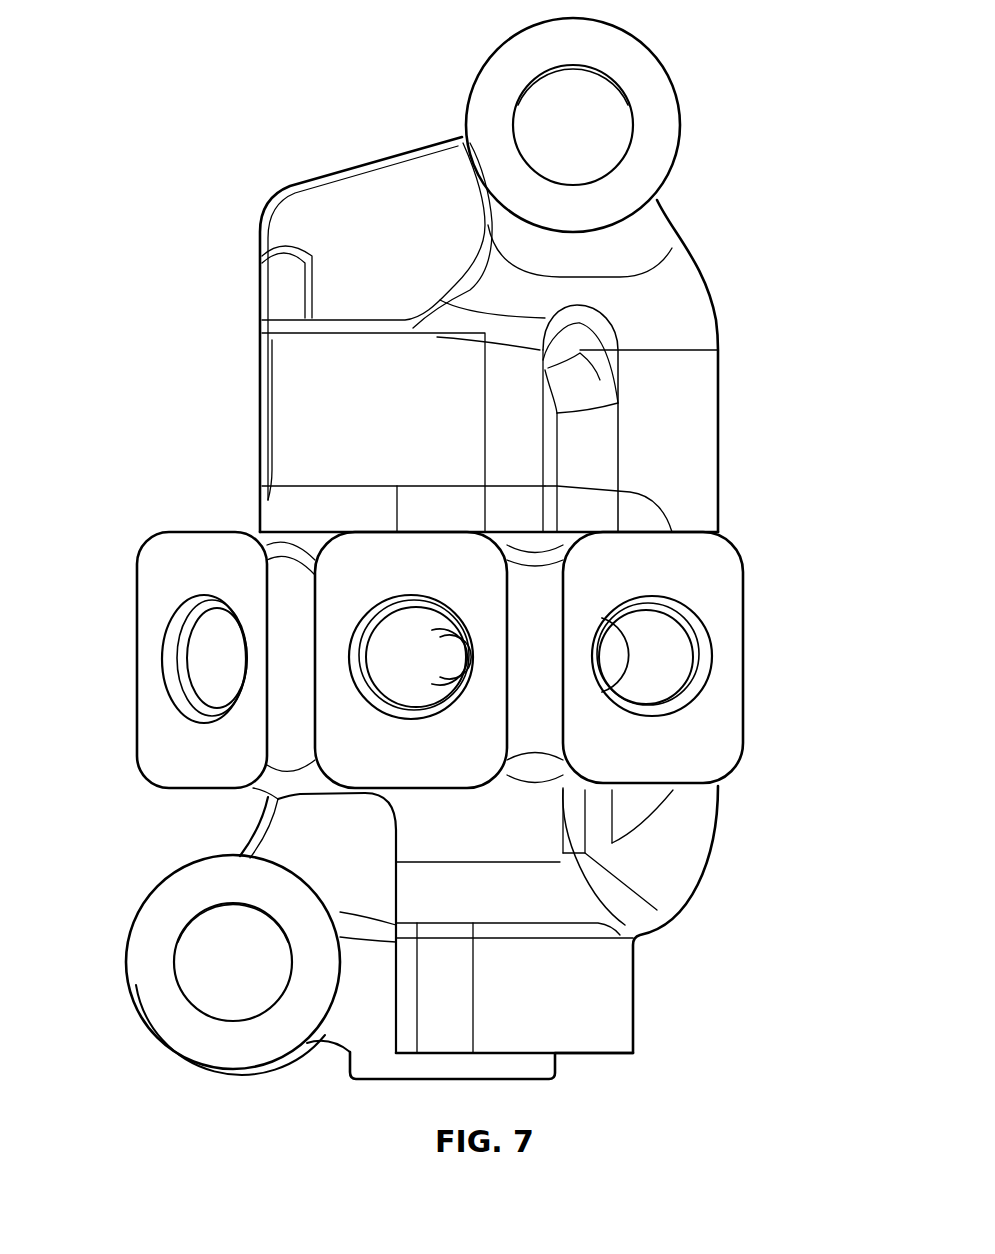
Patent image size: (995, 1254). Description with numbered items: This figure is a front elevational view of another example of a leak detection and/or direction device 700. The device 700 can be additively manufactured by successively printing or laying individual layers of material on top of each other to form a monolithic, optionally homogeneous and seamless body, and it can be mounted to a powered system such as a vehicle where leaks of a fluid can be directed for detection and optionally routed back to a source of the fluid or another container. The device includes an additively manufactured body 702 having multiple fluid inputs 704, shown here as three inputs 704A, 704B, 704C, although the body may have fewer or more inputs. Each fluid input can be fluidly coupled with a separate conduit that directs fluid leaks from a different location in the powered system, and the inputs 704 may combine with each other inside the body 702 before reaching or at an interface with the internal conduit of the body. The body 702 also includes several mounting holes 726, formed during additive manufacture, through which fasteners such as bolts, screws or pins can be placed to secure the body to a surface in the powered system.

The leak detection and/or direction device 700 is at (212, 130).
The additively manufactured body 702 is at (698, 332).
The fluid inputs 704 is at (172, 613).
The fluid input 704A is at (200, 655).
The fluid input 704B is at (420, 655).
The fluid input 704C is at (643, 658).
The mounting holes 726 is at (601, 141).